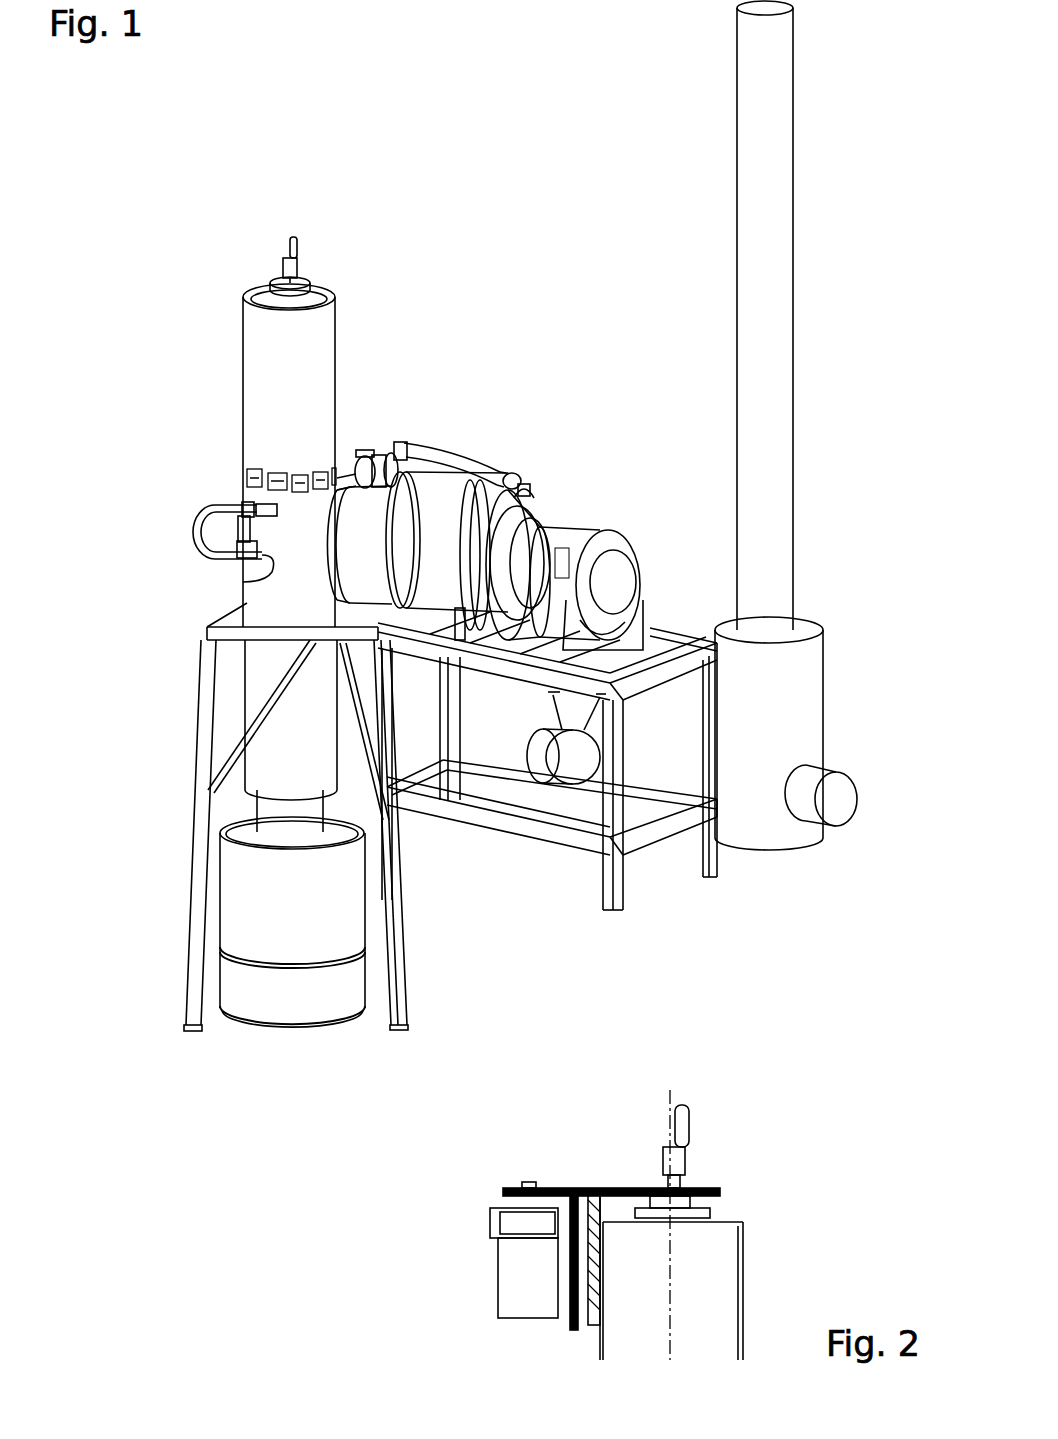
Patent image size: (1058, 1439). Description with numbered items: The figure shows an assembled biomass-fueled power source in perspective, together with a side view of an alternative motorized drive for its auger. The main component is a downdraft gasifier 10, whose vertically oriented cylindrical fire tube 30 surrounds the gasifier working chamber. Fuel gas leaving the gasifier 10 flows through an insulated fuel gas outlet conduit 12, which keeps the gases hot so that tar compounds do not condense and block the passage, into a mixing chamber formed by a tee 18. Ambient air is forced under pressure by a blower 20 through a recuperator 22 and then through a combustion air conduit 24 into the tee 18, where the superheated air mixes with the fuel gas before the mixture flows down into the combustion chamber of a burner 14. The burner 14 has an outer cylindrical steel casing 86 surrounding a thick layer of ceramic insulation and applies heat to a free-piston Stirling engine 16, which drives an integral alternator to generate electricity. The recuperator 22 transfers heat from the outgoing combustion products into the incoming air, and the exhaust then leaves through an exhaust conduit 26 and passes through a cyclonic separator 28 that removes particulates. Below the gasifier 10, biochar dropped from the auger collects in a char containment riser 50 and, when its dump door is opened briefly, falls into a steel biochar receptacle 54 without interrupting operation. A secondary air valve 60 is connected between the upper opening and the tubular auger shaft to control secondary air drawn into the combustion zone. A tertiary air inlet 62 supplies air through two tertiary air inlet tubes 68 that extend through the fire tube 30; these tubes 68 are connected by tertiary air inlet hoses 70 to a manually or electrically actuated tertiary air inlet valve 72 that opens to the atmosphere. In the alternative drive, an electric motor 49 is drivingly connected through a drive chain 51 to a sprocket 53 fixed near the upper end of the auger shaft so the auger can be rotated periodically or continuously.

In FIG. 1, the downdraft gasifier 10 is at (270, 357).
In FIG. 2, the downdraft gasifier 10 is at (717, 1280).
In FIG. 1, the fuel gas outlet conduit 12 is at (346, 478).
In FIG. 1, the burner 14 is at (480, 492).
In FIG. 1, the free-piston Stirling engine 16 is at (654, 542).
In FIG. 1, the tee 18 is at (448, 492).
In FIG. 1, the blower 20 is at (570, 767).
In FIG. 1, the recuperator 22 is at (553, 507).
In FIG. 1, the combustion air conduit 24 is at (480, 470).
In FIG. 1, the exhaust conduit 26 is at (655, 617).
In FIG. 1, the cyclonic separator 28 is at (848, 394).
In FIG. 1, the fire tube 30 is at (280, 583).
In FIG. 2, the electric motor 49 is at (530, 1263).
In FIG. 1, the char containment riser 50 is at (290, 821).
In FIG. 2, the drive chain 51 is at (633, 1188).
In FIG. 1, the sprocket 53 is at (278, 277).
In FIG. 1, the steel biochar receptacle 54 is at (258, 987).
In FIG. 1, the secondary air valve 60 is at (298, 260).
In FIG. 2, the secondary air valve 60 is at (692, 1130).
In FIG. 1, the tertiary air inlet 62 is at (176, 510).
In FIG. 1, the tertiary air inlet tubes 68 is at (259, 511).
In FIG. 1, the tertiary air inlet hoses 70 is at (193, 527).
In FIG. 1, the tertiary air inlet valve 72 is at (243, 581).
In FIG. 1, the burner outer casing 86 is at (500, 490).